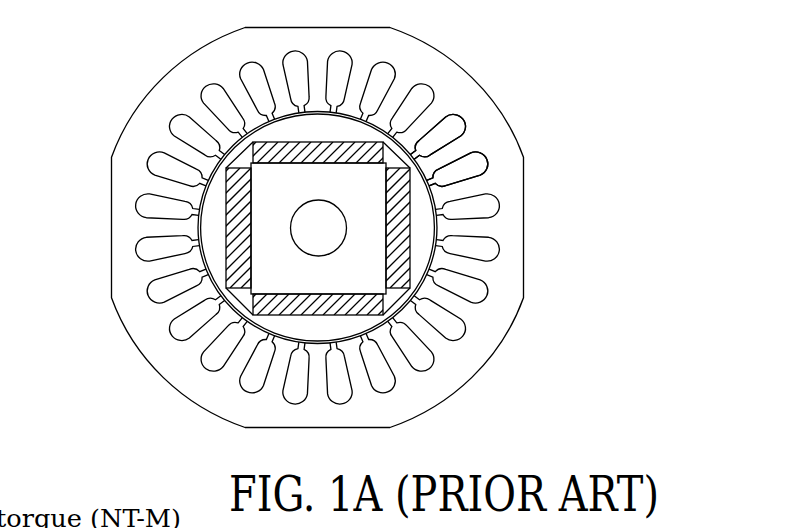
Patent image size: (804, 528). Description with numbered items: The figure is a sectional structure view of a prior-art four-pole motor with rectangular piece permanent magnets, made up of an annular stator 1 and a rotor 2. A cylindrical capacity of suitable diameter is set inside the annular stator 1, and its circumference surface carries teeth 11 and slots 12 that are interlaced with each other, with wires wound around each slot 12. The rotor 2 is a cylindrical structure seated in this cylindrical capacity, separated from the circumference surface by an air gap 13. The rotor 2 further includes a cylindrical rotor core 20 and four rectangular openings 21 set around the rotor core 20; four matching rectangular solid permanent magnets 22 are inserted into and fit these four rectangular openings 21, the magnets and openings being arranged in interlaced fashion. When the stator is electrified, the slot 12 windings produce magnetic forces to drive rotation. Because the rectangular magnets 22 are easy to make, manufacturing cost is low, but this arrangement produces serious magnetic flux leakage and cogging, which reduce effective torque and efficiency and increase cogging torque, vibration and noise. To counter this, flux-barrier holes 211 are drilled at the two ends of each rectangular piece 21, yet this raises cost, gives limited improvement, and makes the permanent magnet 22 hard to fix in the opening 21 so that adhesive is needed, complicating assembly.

The annular stator 1 is at (343, 228).
The tooth 11 is at (450, 160).
The slot 12 is at (478, 172).
The air gap 13 is at (402, 325).
The rotor 2 is at (310, 247).
The rotor core 20 is at (205, 227).
The rectangular opening 21 is at (373, 124).
The rectangular solid permanent magnet 22 is at (397, 232).
The flux-barrier hole 211 is at (237, 300).